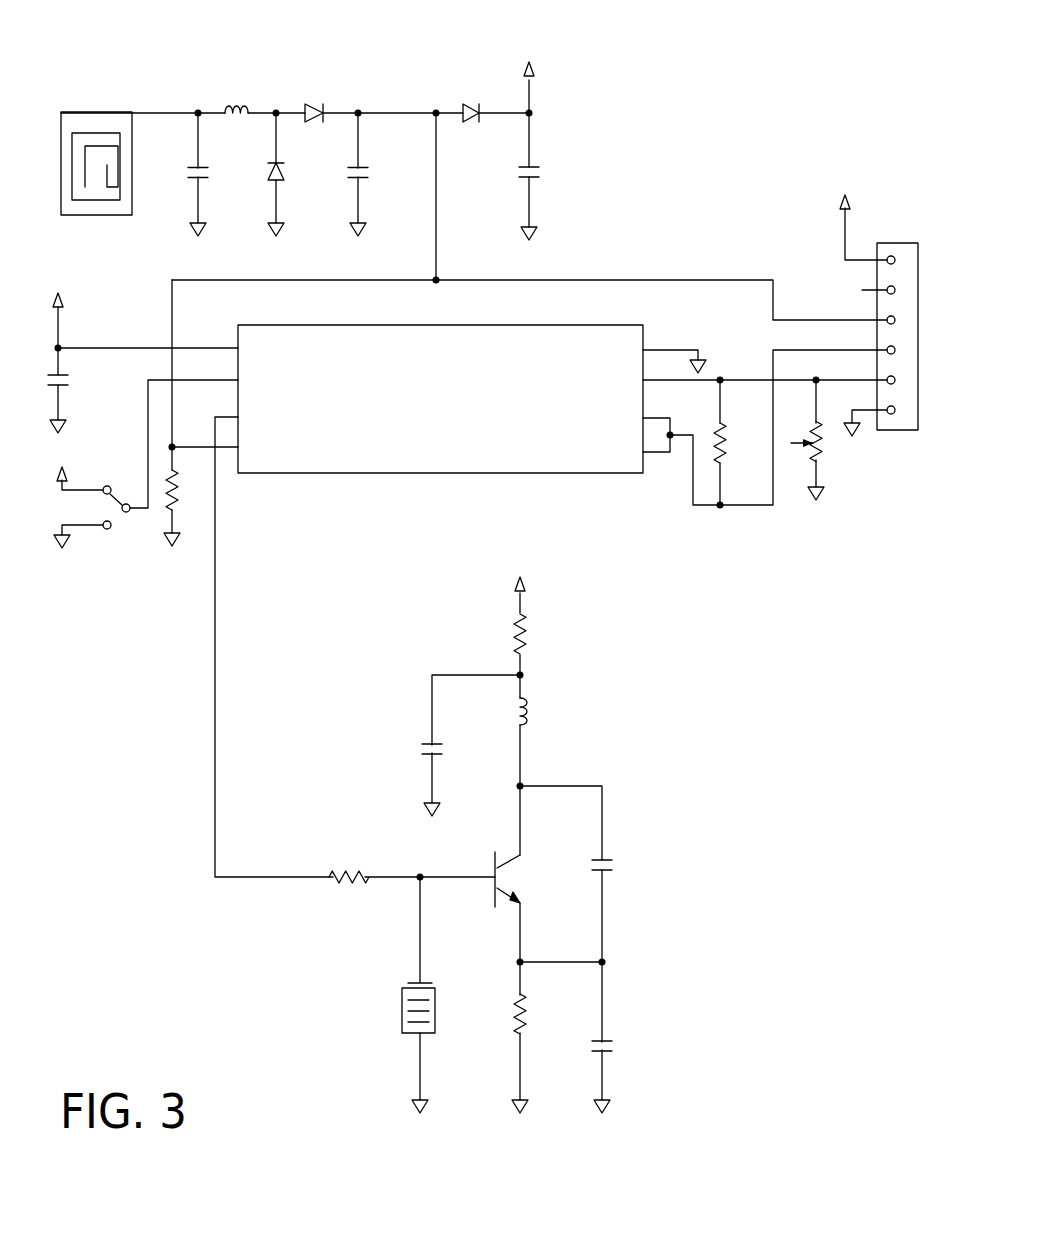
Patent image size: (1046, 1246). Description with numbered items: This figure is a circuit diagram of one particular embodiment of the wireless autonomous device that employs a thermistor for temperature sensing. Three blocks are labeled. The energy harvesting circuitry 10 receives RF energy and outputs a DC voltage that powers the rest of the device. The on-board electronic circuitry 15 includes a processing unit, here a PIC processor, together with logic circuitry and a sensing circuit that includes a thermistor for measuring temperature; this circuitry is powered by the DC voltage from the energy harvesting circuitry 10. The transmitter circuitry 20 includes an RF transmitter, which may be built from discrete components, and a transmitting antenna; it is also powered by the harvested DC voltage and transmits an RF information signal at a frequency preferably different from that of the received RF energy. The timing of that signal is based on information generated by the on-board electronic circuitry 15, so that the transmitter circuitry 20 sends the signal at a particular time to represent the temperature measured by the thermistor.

The energy harvesting circuitry 10 is at (397, 75).
The on-board electronic circuitry 15 is at (685, 258).
The transmitter circuitry 20 is at (702, 765).